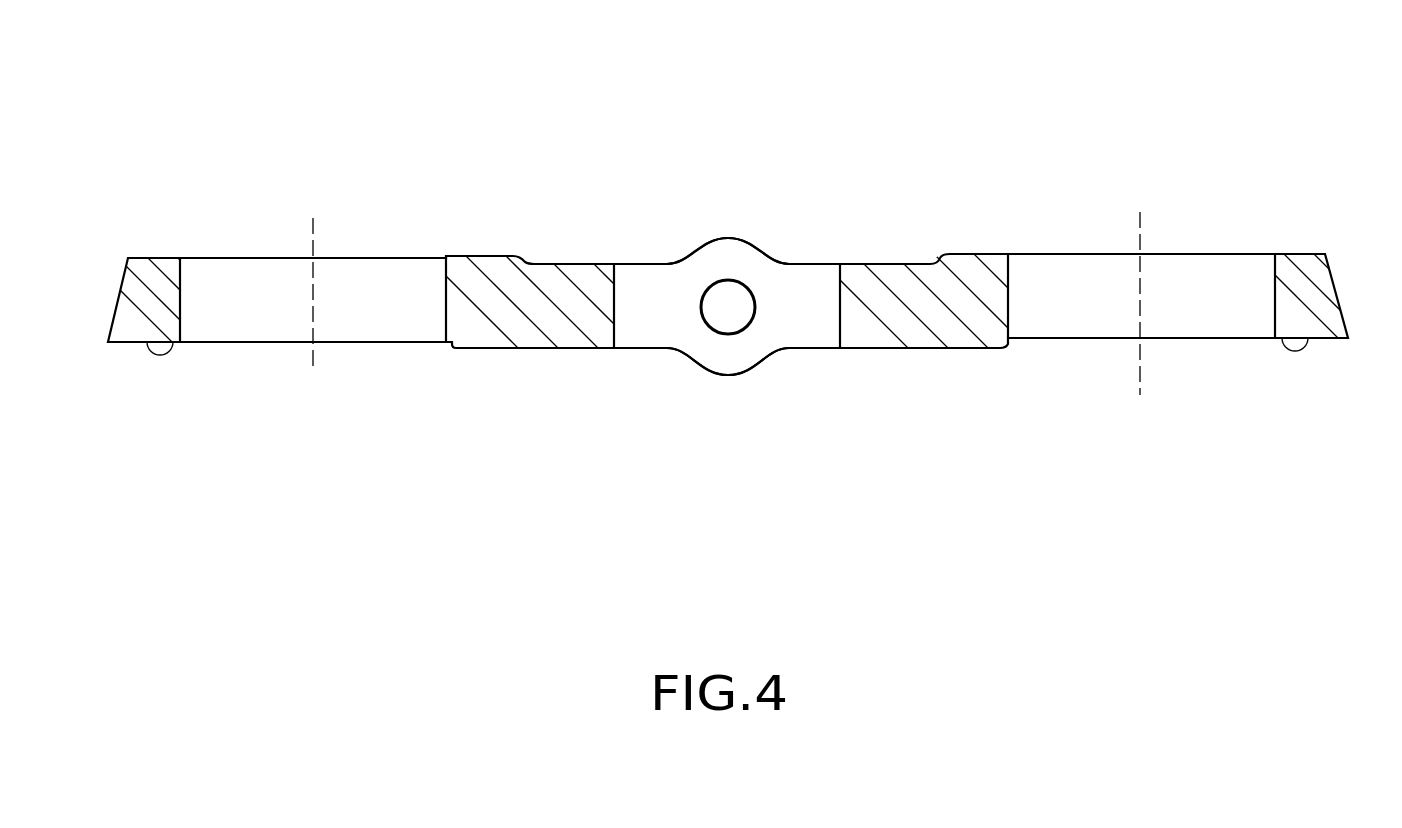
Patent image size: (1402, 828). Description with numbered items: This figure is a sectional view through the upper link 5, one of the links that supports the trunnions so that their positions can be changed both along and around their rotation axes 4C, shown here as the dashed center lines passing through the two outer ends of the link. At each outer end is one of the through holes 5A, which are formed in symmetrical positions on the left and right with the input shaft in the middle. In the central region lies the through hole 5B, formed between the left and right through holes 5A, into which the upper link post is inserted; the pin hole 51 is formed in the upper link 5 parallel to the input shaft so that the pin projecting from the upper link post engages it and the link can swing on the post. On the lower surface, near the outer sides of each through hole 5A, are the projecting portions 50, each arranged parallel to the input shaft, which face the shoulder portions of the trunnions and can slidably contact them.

The upper link 5 is at (493, 199).
The through holes 5A is at (180, 278).
The through hole 5B is at (818, 264).
The pin hole 51 is at (712, 289).
The projecting portions 50 is at (158, 354).
The rotation axes 4C is at (313, 358).